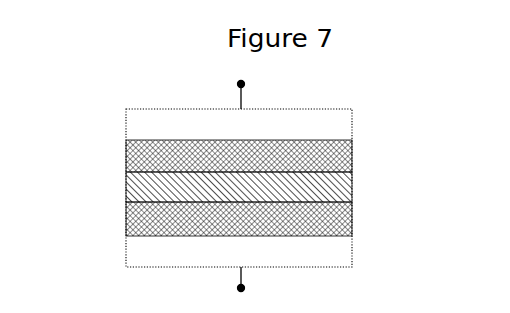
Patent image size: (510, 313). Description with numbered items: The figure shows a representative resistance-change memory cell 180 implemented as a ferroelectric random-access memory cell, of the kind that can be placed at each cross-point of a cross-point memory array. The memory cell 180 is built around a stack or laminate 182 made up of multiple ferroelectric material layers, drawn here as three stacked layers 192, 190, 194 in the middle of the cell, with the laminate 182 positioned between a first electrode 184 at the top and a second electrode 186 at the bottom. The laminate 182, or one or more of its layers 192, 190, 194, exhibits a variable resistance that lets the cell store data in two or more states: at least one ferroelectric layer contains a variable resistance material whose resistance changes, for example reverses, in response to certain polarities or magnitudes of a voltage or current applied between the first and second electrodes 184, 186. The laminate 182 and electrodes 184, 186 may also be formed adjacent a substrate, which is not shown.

The resistance-change memory cell 180 is at (181, 81).
The stack or laminate 182 is at (353, 140).
The first electrode 184 is at (352, 125).
The second electrode 186 is at (352, 251).
The ion conductor layer 190 is at (126, 190).
The first electrochromic layer 192 is at (126, 157).
The second electrochromic layer 194 is at (126, 220).